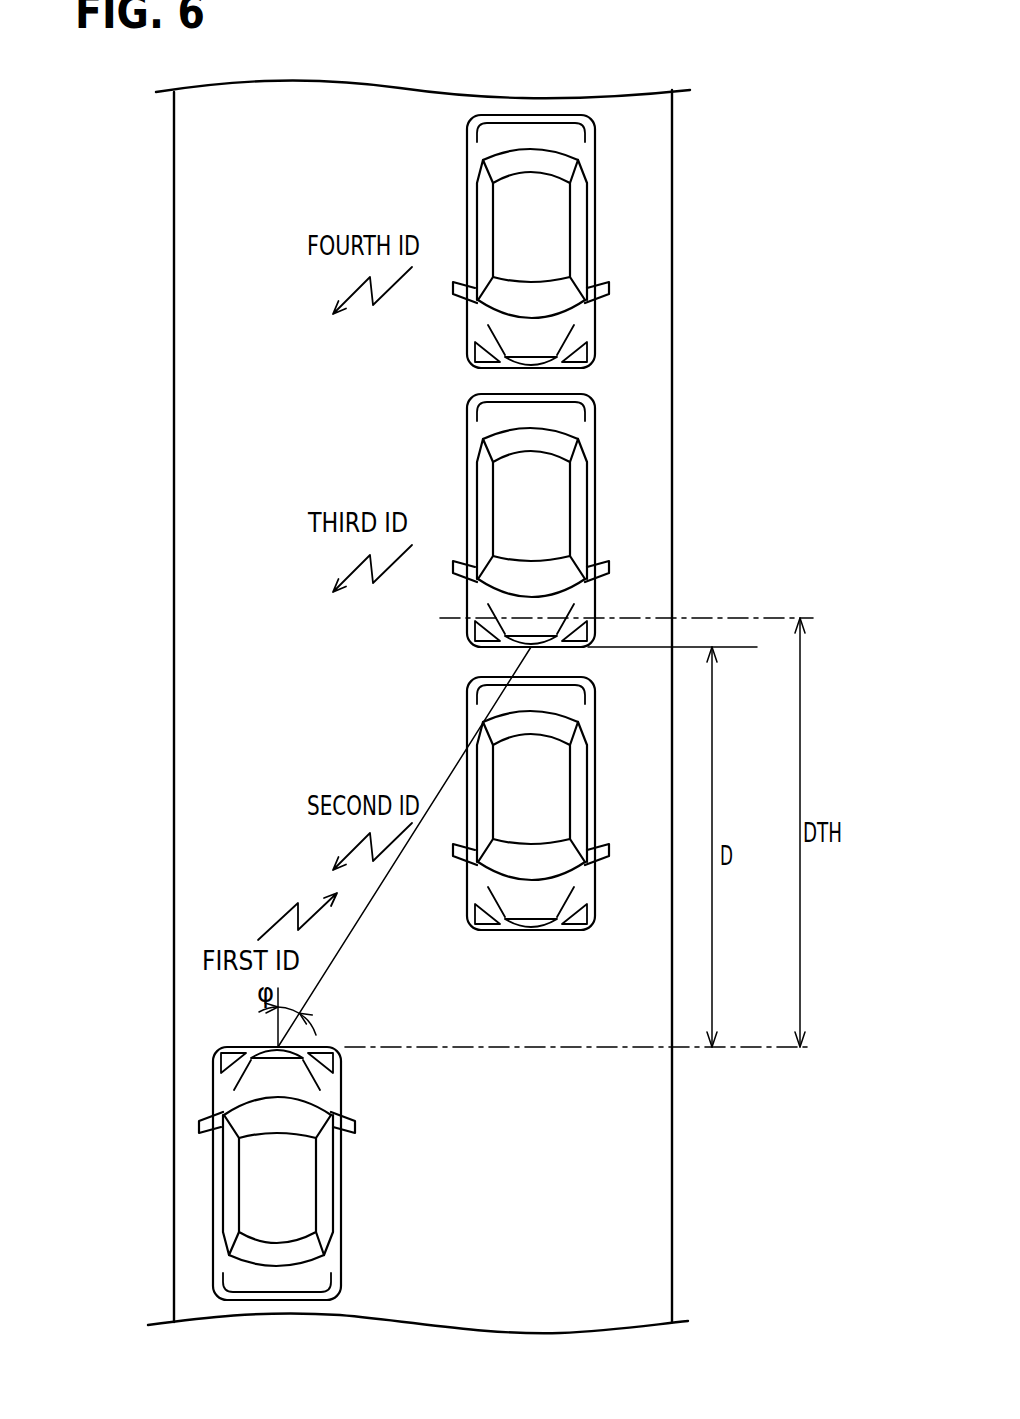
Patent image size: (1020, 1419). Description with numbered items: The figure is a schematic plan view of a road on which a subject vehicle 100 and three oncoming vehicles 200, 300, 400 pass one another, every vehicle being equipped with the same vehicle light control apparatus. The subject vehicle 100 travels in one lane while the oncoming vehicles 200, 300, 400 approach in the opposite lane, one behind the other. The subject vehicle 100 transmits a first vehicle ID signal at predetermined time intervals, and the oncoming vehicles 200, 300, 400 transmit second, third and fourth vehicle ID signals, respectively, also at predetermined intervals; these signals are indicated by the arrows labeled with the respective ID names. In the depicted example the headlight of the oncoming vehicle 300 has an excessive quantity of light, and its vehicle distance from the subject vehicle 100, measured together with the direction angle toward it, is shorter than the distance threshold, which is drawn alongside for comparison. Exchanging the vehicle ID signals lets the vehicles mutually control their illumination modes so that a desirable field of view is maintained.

The subject vehicle 100 is at (344, 1205).
The oncoming vehicle 200 is at (632, 777).
The oncoming vehicle 300 is at (632, 497).
The oncoming vehicle 400 is at (632, 216).